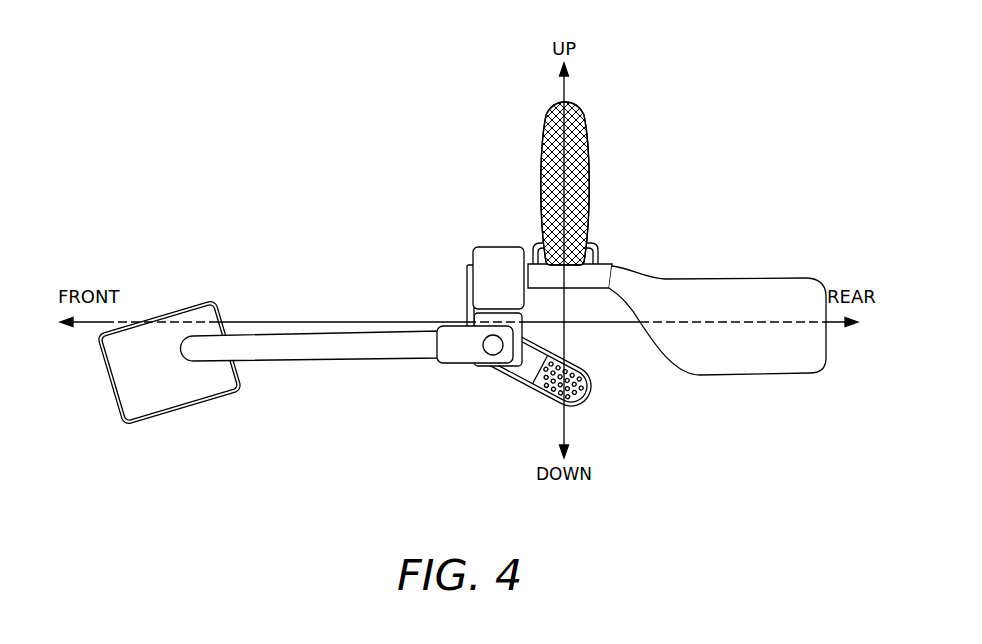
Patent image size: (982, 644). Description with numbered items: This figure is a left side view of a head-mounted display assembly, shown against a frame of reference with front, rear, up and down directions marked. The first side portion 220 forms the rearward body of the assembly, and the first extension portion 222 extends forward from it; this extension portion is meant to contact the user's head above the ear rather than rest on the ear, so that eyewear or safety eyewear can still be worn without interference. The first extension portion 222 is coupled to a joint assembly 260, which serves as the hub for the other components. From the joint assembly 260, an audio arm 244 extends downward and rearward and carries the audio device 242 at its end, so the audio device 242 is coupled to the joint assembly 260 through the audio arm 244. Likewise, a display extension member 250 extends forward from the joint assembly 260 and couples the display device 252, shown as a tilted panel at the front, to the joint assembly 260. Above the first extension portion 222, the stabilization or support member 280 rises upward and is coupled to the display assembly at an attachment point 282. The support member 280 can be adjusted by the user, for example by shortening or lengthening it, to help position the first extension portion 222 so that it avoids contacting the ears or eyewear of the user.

The first side portion 220 is at (736, 288).
The first extension portion 222 is at (600, 273).
The audio device 242 is at (583, 383).
The audio arm 244 is at (520, 372).
The display extension member 250 is at (313, 362).
The display device 252 is at (207, 300).
The joint assembly 260 is at (485, 247).
The support member 280 is at (578, 103).
The attachment point 282 is at (594, 244).